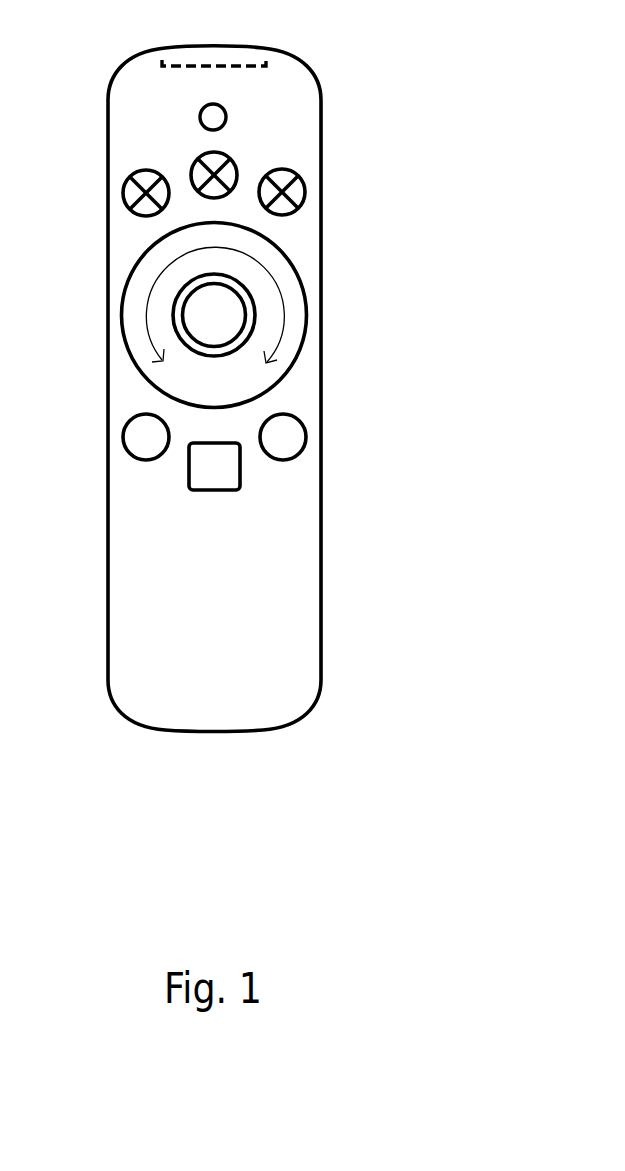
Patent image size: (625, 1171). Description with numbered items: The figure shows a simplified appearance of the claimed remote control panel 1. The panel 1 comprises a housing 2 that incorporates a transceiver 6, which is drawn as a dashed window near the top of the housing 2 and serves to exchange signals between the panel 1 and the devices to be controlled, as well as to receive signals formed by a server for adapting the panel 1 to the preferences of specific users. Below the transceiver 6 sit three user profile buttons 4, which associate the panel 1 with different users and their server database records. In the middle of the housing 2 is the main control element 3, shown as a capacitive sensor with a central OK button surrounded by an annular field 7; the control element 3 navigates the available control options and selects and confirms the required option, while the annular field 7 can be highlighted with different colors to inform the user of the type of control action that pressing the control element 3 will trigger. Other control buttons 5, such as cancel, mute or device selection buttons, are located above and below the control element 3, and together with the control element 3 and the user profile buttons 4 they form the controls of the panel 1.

The panel 1 is at (470, 134).
The housing 2 is at (303, 159).
The main control element 3 is at (273, 262).
The user profile buttons 4 is at (280, 173).
The other control buttons 5 is at (215, 117).
The transceiver 6 is at (215, 57).
The annular field 7 is at (210, 352).